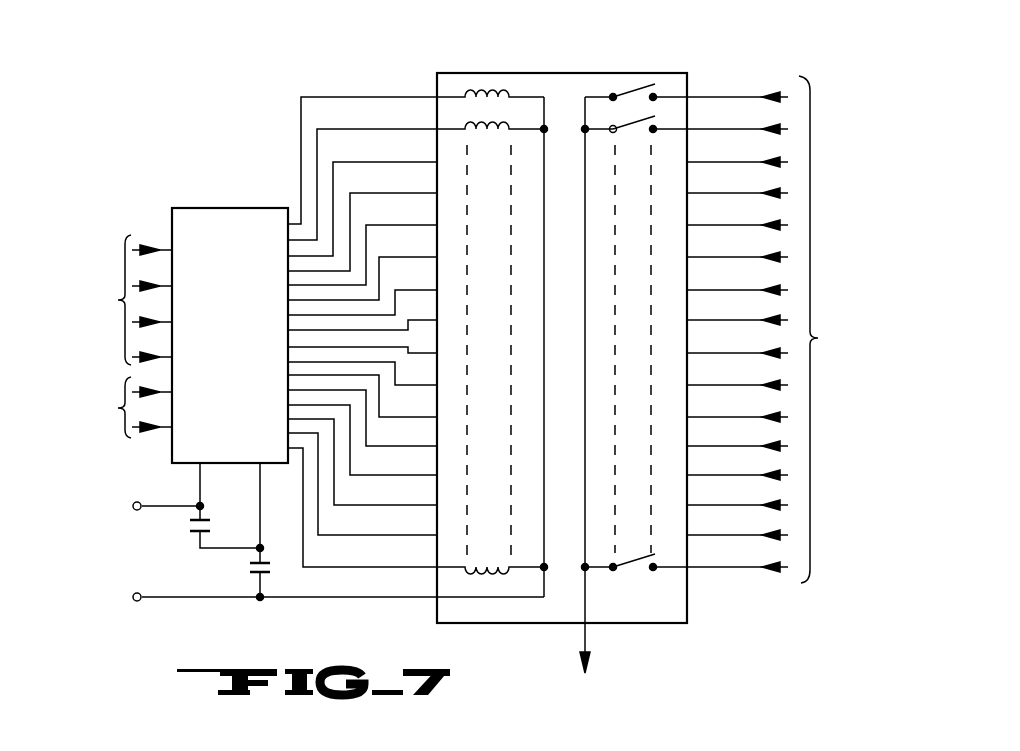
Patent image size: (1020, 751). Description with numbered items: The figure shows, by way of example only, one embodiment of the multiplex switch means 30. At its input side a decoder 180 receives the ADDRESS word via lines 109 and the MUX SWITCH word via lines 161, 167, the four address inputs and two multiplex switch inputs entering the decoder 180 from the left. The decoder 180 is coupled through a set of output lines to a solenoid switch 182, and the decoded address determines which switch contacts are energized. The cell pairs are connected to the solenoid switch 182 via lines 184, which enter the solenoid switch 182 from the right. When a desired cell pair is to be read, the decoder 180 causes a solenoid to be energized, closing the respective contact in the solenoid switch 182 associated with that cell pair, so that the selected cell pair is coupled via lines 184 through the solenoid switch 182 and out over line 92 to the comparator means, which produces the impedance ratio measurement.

The multiplex switch means 30 is at (350, 60).
The decoder 180 is at (226, 210).
The solenoid switch 182 is at (575, 66).
The lines 184 is at (785, 445).
The line 92 is at (585, 645).
The lines 109 is at (99, 300).
The lines 161 is at (104, 409).
The lines 167 is at (118, 432).